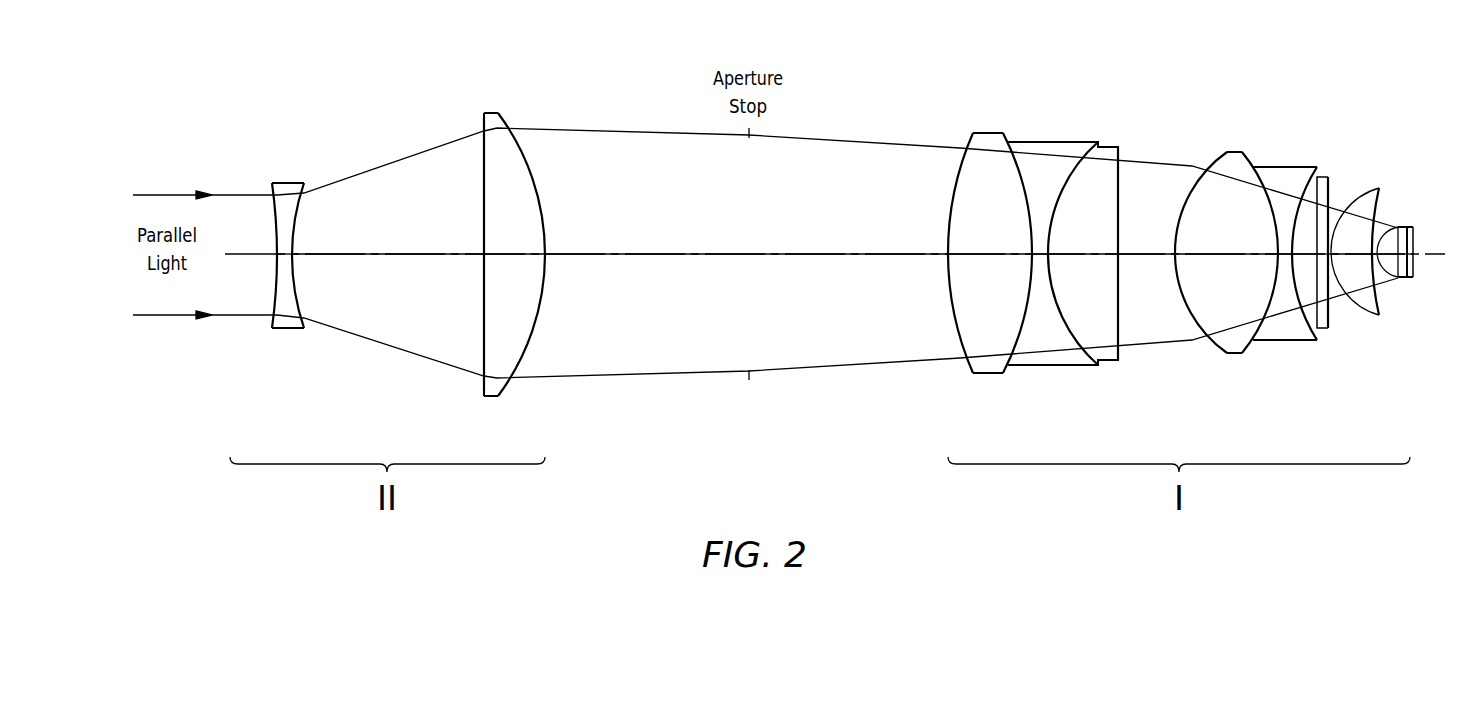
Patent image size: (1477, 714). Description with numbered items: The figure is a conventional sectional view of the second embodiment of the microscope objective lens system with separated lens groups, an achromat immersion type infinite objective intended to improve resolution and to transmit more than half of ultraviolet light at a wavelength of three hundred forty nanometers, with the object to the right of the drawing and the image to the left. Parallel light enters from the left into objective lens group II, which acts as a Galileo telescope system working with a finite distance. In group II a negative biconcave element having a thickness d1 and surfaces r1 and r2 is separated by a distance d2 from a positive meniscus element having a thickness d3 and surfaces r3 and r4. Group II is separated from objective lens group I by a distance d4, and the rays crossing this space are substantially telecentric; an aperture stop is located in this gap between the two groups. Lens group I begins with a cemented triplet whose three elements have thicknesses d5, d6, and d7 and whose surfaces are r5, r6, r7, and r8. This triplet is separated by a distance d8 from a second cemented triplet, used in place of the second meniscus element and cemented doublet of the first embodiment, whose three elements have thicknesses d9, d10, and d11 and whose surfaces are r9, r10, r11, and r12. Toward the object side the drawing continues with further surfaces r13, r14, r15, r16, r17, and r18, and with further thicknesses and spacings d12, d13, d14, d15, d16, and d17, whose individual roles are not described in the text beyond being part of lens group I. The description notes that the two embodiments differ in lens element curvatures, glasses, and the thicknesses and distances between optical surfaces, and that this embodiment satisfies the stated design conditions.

The surface of negative biconcave element r1 is at (275, 220).
The surface of negative biconcave element r2 is at (303, 200).
The surface of positive meniscus element r3 is at (483, 183).
The surface of positive meniscus element r4 is at (530, 168).
The surface of first cemented triplet r5 is at (953, 200).
The surface of first cemented triplet r6 is at (1019, 168).
The surface of first cemented triplet r7 is at (1068, 170).
The surface of first cemented triplet r8 is at (1122, 190).
The surface of second cemented triplet r9 is at (1192, 195).
The surface of second cemented triplet r10 is at (1258, 185).
The surface of second cemented triplet r11 is at (1288, 207).
The surface of second cemented triplet r12 is at (1318, 200).
The radius of curvature of thirteenth lens surface r13 is at (1335, 203).
The radius of curvature of fourteenth lens surface r14 is at (1366, 205).
The radius of curvature of fifteenth lens surface r15 is at (1381, 218).
The radius of curvature of sixteenth lens surface r16 is at (1396, 232).
The radius of curvature of seventeenth lens surface r17 is at (1410, 228).
The radius of curvature of eighteenth lens surface r18 is at (1415, 243).
The thickness of negative biconcave element d1 is at (283, 256).
The distance between biconcave element and meniscus element d2 is at (405, 257).
The thickness of positive meniscus element d3 is at (512, 257).
The distance between lens group II and lens group I d4 is at (684, 257).
The thickness of first cemented triplet element d5 is at (985, 257).
The thickness of first cemented triplet element d6 is at (1036, 257).
The thickness of first cemented triplet element d7 is at (1084, 257).
The distance between cemented triplets d8 is at (1139, 257).
The thickness of second cemented triplet element d9 is at (1203, 257).
The thickness of second cemented triplet element d10 is at (1267, 262).
The thickness of second cemented triplet element d11 is at (1305, 262).
The axial thickness of seventh lens d12 is at (1323, 260).
The axial air space between seventh and eighth lens d13 is at (1344, 258).
The axial thickness of eighth lens d14 is at (1351, 258).
The axial air space between eighth and ninth lens d15 is at (1376, 258).
The axial thickness of ninth lens d16 is at (1389, 258).
The axial thickness of plate element d17 is at (1412, 258).